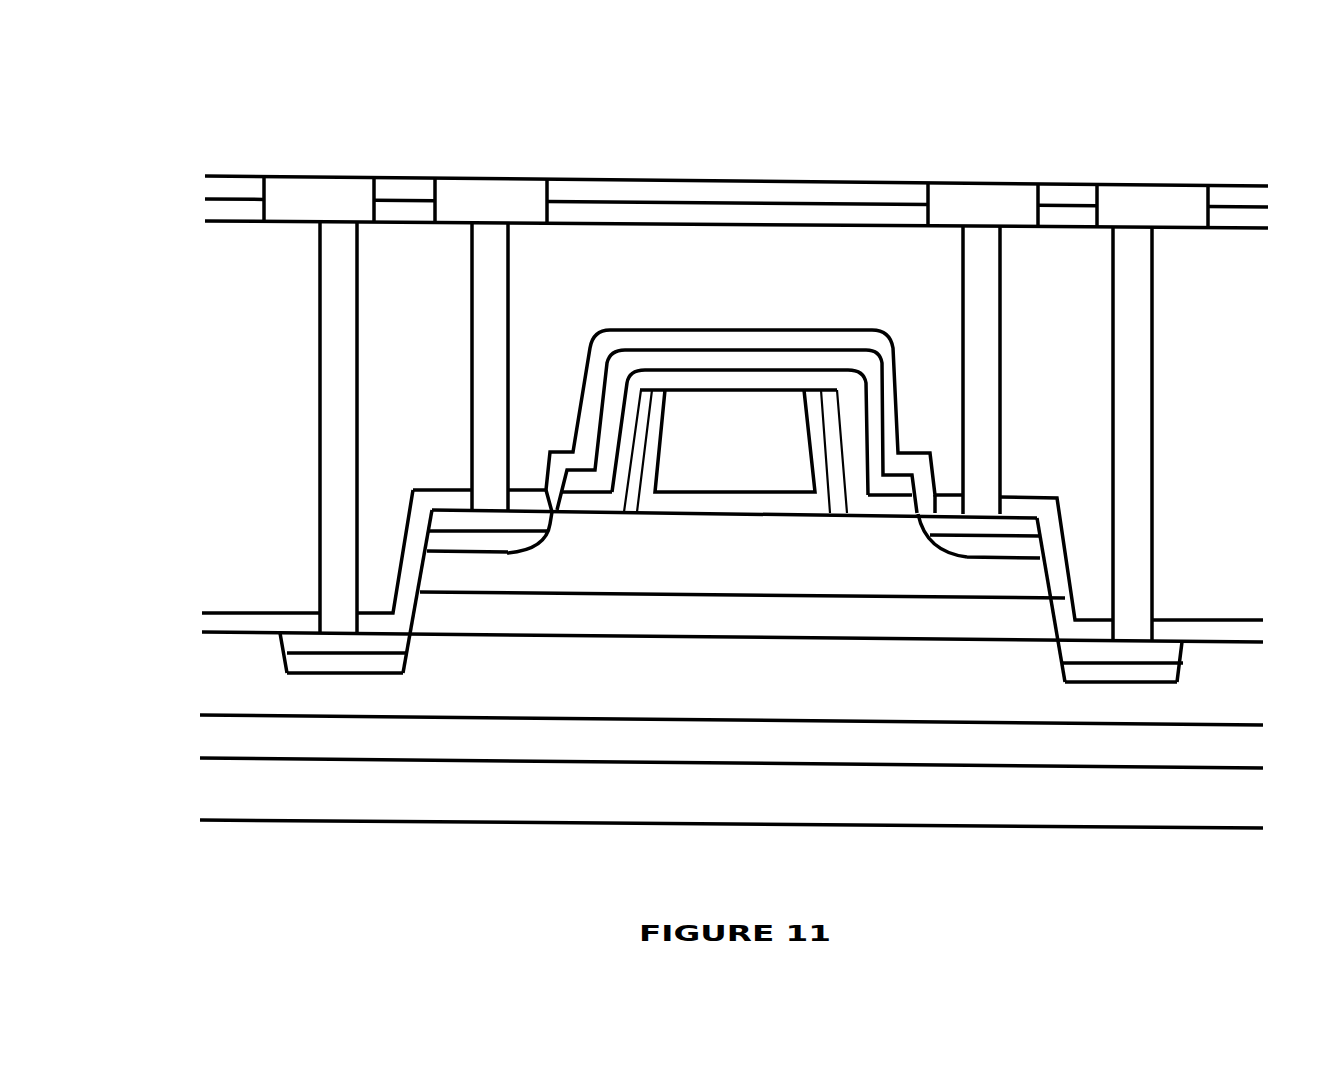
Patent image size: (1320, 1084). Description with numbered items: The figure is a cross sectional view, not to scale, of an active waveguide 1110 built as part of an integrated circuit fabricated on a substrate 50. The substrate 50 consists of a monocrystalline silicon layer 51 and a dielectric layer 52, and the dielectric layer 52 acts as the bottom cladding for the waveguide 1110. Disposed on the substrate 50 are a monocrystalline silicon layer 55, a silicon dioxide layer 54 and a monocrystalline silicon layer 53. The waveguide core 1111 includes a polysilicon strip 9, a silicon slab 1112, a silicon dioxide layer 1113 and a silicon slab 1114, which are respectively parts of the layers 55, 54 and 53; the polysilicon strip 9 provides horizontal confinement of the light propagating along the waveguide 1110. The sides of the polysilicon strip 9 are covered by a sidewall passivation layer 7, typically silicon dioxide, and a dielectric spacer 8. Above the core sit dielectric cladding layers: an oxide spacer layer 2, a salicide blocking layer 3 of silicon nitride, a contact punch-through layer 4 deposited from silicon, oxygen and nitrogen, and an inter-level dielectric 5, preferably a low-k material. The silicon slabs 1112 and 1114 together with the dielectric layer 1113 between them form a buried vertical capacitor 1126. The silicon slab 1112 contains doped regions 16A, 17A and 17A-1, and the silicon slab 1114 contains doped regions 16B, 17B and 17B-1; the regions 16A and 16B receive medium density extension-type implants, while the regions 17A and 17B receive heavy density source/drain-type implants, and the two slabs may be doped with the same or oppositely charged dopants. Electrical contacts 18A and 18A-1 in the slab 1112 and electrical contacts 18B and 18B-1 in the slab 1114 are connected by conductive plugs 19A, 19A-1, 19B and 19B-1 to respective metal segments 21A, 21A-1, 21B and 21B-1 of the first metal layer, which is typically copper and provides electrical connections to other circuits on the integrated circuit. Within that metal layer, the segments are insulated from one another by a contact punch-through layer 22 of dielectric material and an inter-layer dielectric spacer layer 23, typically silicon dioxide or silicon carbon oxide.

The oxide spacer layer 2 is at (710, 380).
The salicide blocking layer 3 is at (670, 358).
The contact punch-through layer 4 is at (632, 337).
The inter-level dielectric 5 is at (204, 256).
The sidewall passivation layer 7 is at (655, 455).
The dielectric spacer 8 is at (636, 483).
The polysilicon strip 9 is at (730, 452).
The doped region 16A is at (596, 584).
The doped region 16B is at (583, 681).
The doped region 17A is at (468, 539).
The doped region 17A-1 is at (993, 547).
The doped region 17B is at (373, 664).
The doped region 17B-1 is at (1155, 670).
The electrical contact 18A is at (453, 523).
The electrical contact 18A-1 is at (1017, 528).
The electrical contact 18B is at (305, 643).
The electrical contact 18B-1 is at (1162, 650).
The conductive plug 19A is at (493, 300).
The conductive plug 19A-1 is at (985, 300).
The conductive plug 19B is at (336, 302).
The conductive plug 19B-1 is at (1135, 300).
The metal segment 21A is at (483, 203).
The metal segment 21A-1 is at (985, 207).
The metal segment 21B is at (320, 202).
The metal segment 21B-1 is at (1153, 208).
The contact punch-through layer 22 is at (577, 213).
The inter-layer dielectric spacer layer 23 is at (627, 192).
The substrate 50 is at (168, 740).
The monocrystalline silicon layer 51 is at (199, 802).
The dielectric layer 52 is at (199, 749).
The monocrystalline silicon layer 53 is at (199, 689).
The dielectric layer 54 is at (434, 625).
The monocrystalline silicon layer 55 is at (563, 568).
The active waveguide 1110 is at (737, 746).
The waveguide core 1111 is at (827, 310).
The silicon slab 1112 is at (708, 564).
The silicon dioxide layer 1113 is at (714, 625).
The silicon slab 1114 is at (711, 685).
The buried vertical capacitor 1126 is at (740, 138).